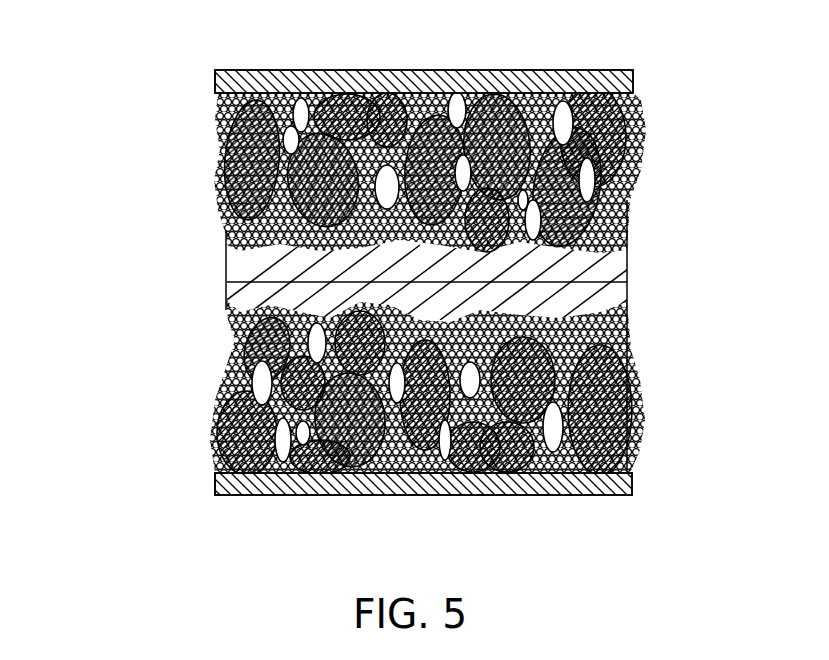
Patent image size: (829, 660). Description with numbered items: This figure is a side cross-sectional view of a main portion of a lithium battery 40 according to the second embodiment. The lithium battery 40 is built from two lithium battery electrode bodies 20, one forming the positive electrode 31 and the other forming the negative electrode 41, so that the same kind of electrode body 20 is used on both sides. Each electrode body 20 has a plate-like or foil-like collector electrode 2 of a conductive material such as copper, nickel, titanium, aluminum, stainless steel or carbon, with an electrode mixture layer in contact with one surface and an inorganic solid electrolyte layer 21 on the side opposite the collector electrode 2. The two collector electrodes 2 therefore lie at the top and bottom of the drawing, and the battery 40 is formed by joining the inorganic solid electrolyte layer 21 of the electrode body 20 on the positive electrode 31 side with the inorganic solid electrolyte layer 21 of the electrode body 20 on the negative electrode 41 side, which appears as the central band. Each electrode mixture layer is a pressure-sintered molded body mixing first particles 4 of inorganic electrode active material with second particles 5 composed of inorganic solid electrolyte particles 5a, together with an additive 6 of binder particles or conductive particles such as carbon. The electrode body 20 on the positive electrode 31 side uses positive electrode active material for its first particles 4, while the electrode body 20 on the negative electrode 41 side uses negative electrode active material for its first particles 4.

The lithium battery 40 is at (133, 126).
The collector electrode 2 is at (215, 81).
The first particles 4 is at (602, 93).
The second particles 5 is at (472, 92).
The inorganic electrolyte particles 5a is at (441, 285).
The additive 6 is at (301, 100).
The lithium battery electrode body 20 is at (477, 272).
The inorganic solid electrolyte layer 21 is at (228, 297).
The positive electrode 31 is at (645, 277).
The negative electrode 41 is at (645, 70).